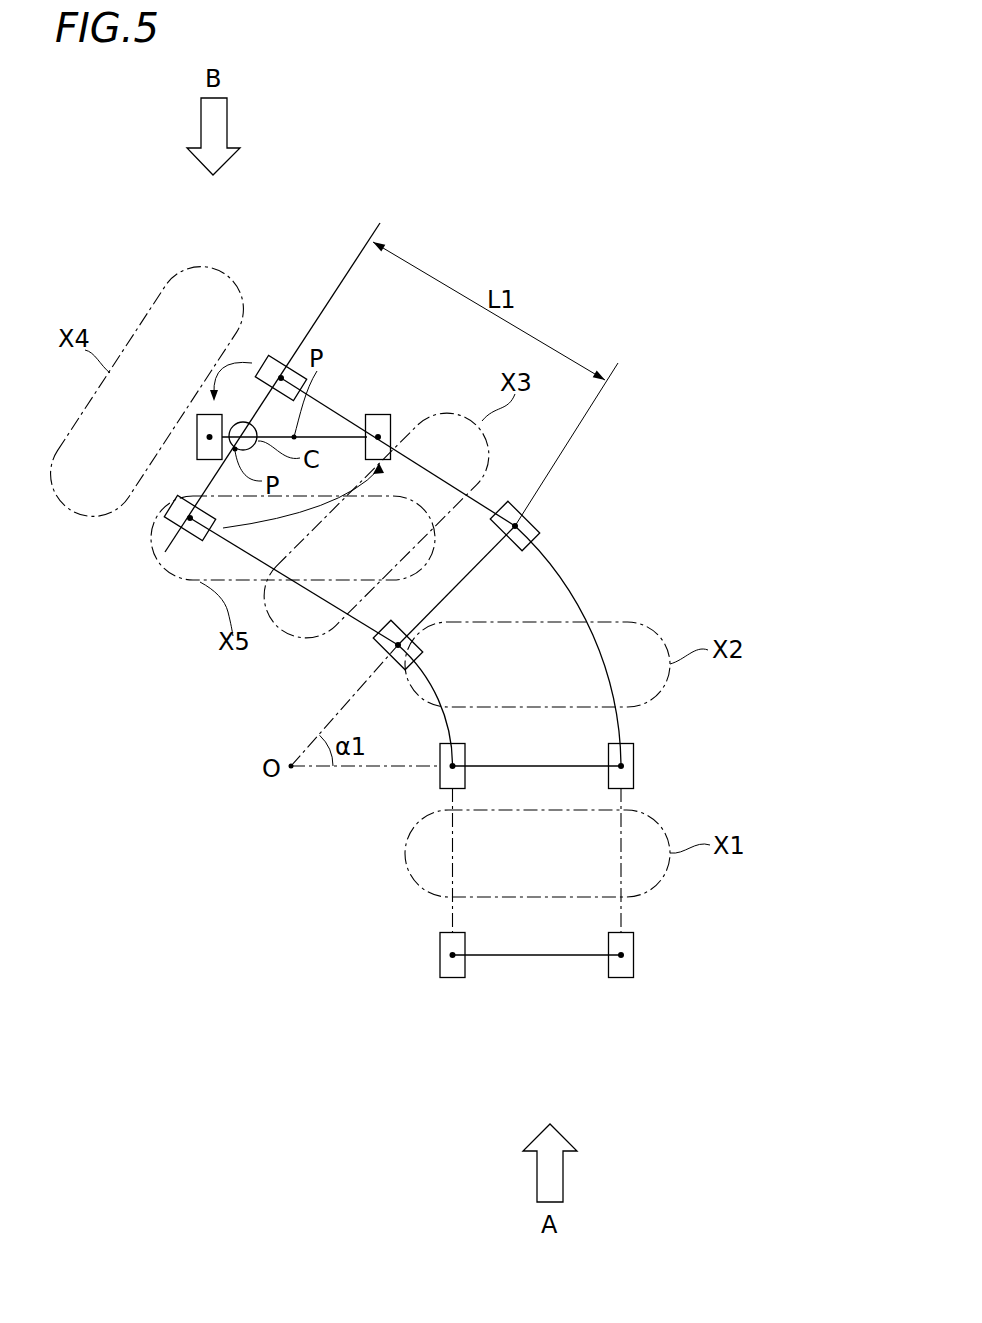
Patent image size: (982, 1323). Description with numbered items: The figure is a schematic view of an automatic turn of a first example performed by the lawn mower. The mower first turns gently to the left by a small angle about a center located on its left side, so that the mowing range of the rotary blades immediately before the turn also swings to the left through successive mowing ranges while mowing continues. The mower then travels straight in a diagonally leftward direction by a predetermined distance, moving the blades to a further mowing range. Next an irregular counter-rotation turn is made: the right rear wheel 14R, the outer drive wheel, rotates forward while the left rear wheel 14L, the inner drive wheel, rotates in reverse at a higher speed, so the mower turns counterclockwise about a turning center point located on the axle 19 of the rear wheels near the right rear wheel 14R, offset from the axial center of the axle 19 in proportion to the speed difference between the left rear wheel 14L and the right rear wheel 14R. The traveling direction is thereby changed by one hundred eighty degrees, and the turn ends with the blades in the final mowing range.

The left rear wheel 14L is at (381, 415).
The right rear wheel 14R is at (203, 415).
The axle 19 is at (328, 436).